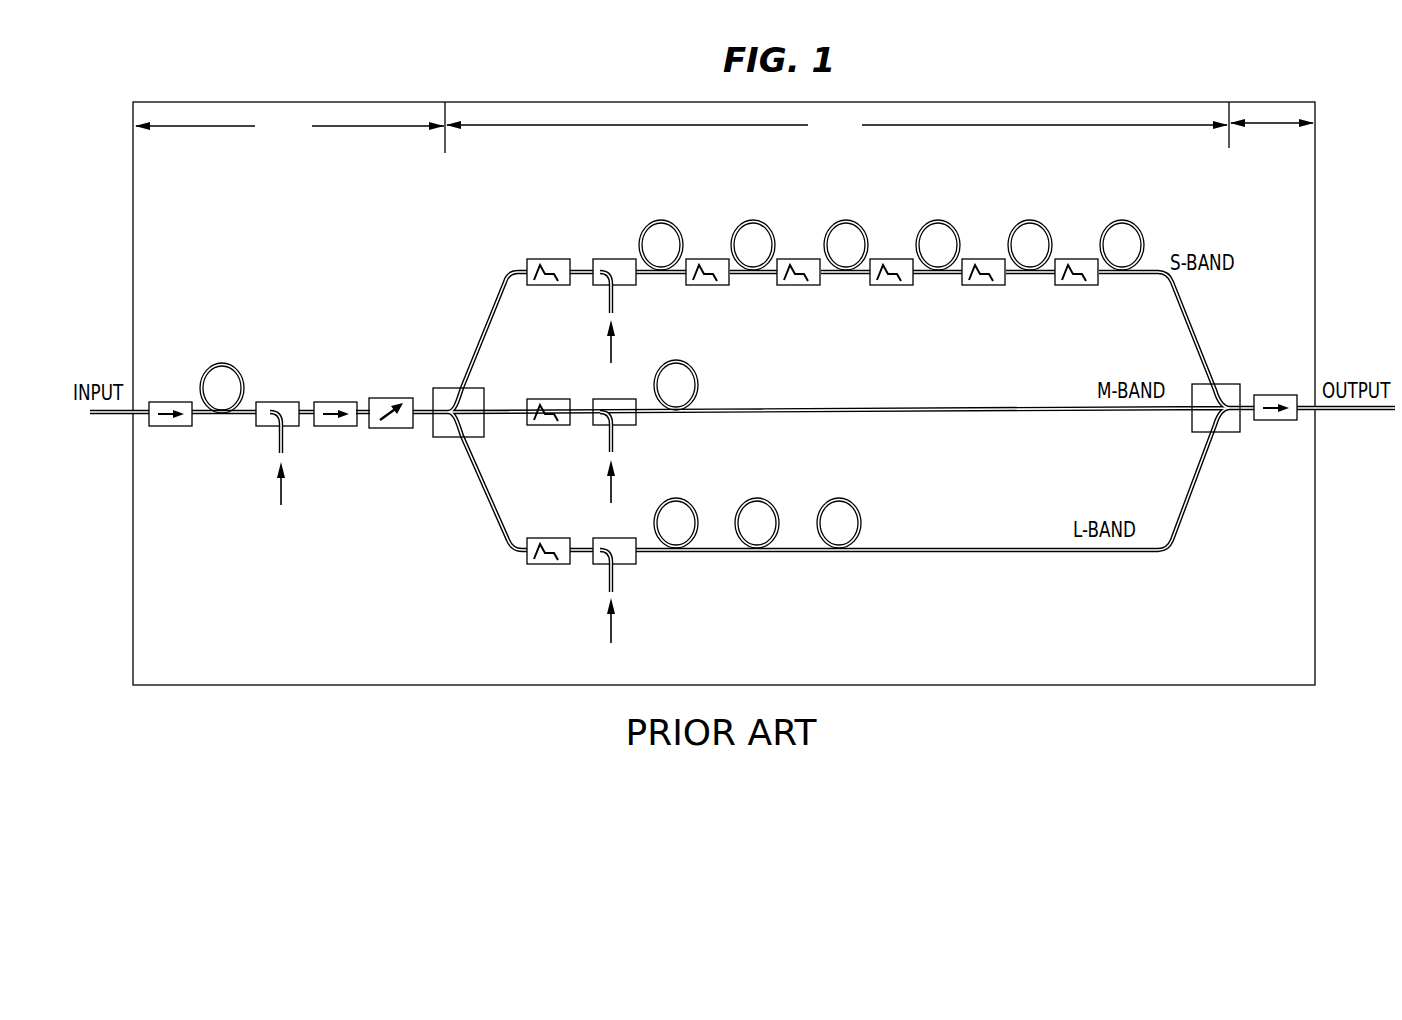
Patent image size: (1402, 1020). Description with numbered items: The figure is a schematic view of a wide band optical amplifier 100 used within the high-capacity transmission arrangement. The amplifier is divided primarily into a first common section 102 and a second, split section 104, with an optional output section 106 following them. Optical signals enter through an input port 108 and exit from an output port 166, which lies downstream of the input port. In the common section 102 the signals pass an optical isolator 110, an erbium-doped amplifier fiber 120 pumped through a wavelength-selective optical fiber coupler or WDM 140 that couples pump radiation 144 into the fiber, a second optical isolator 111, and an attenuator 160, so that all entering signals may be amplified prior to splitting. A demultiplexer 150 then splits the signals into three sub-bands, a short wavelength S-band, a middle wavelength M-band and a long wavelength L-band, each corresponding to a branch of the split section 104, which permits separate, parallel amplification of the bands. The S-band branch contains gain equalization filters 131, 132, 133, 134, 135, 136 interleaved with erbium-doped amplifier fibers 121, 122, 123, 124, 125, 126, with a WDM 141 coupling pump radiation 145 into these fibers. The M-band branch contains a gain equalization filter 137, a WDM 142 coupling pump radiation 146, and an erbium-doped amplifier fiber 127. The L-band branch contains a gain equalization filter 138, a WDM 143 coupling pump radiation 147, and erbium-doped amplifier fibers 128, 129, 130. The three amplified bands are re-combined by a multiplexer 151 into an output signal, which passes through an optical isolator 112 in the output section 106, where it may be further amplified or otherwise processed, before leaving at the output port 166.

The wide band optical amplifier 100 is at (319, 82).
The first common section 102 is at (290, 127).
The second split section 104 is at (837, 125).
The output section 106 is at (1270, 126).
The input port 108 is at (101, 426).
The optical isolator 110 is at (170, 401).
The optical isolator 111 is at (339, 401).
The optical isolator 112 is at (1275, 394).
The erbium-doped amplifier fiber 120 is at (224, 364).
The erbium-doped amplifier fiber 121 is at (661, 221).
The erbium-doped amplifier fiber 122 is at (753, 221).
The erbium-doped amplifier fiber 123 is at (846, 221).
The erbium-doped amplifier fiber 124 is at (938, 221).
The erbium-doped amplifier fiber 125 is at (1030, 221).
The erbium-doped amplifier fiber 126 is at (1122, 221).
The erbium-doped amplifier fiber 127 is at (676, 360).
The erbium-doped amplifier fiber 128 is at (676, 498).
The erbium-doped amplifier fiber 129 is at (757, 498).
The erbium-doped amplifier fiber 130 is at (839, 498).
The gain equalization filter 131 is at (550, 258).
The gain equalization filter 132 is at (712, 286).
The gain equalization filter 133 is at (803, 286).
The gain equalization filter 134 is at (895, 286).
The gain equalization filter 135 is at (987, 286).
The gain equalization filter 136 is at (1080, 286).
The gain equalization filter 137 is at (548, 426).
The gain equalization filter 138 is at (548, 565).
The wavelength-selective optical fiber coupler 140 is at (283, 401).
The wavelength-selective optical fiber coupler 141 is at (611, 258).
The wavelength-selective optical fiber coupler 142 is at (640, 426).
The wavelength-selective optical fiber coupler 143 is at (640, 565).
The pump radiation 144 is at (284, 490).
The pump radiation 145 is at (609, 346).
The pump radiation 146 is at (609, 490).
The pump radiation 147 is at (613, 634).
The demultiplexer 150 is at (435, 438).
The multiplexer 151 is at (1238, 433).
The attenuator 160 is at (393, 397).
The output port 166 is at (1352, 416).